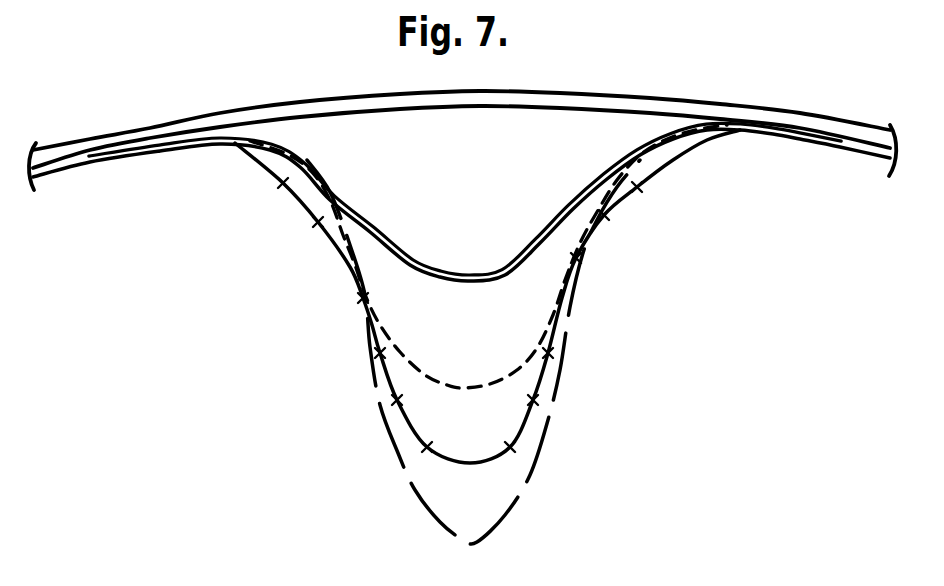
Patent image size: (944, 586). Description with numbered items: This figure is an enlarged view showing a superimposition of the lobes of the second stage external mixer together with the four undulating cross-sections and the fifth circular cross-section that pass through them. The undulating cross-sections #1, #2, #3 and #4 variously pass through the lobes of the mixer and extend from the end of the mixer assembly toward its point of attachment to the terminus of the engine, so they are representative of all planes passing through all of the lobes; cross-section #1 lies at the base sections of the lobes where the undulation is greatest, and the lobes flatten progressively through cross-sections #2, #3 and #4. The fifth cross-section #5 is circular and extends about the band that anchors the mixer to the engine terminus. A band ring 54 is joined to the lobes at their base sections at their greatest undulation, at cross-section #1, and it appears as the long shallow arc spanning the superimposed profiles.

The band ring 54 is at (599, 92).
The cross-section # 1 is at (482, 540).
The cross-section # 2 is at (477, 463).
The cross-section # 3 is at (478, 390).
The cross-section # 4 is at (457, 274).
The cross-section # 5 is at (530, 110).